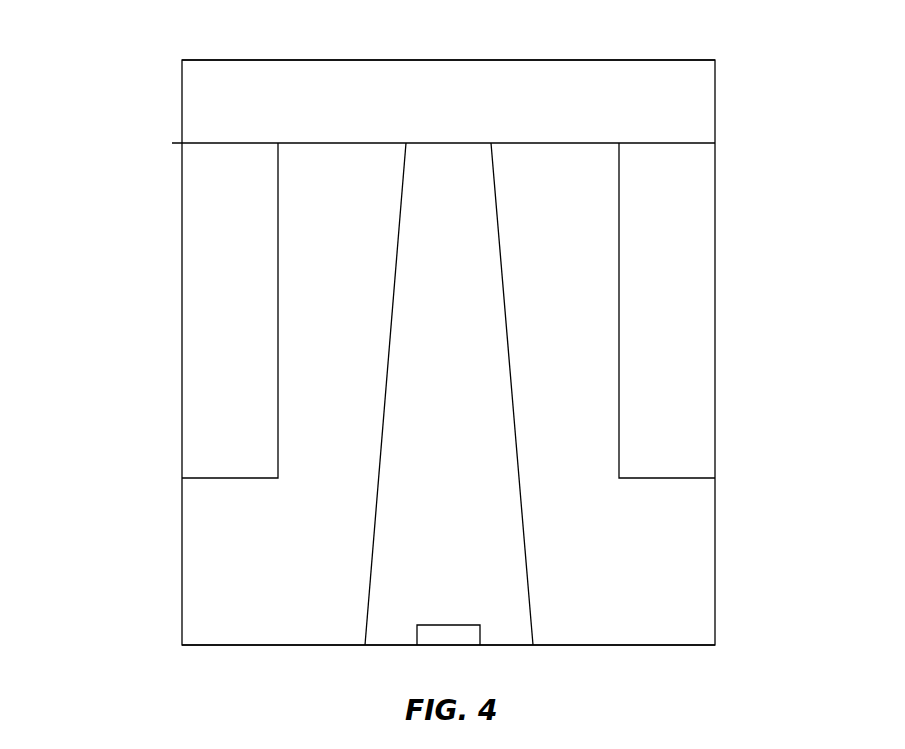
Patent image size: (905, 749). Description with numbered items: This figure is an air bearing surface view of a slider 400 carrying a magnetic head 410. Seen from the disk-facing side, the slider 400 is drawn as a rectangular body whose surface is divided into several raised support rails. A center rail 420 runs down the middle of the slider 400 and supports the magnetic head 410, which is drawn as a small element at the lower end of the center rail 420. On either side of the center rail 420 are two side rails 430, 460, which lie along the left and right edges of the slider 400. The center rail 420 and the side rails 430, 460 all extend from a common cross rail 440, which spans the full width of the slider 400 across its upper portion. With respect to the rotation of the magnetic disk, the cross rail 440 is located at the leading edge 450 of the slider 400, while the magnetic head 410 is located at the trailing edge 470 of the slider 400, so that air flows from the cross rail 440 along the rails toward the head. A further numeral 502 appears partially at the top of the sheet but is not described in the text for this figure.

The slider 400 is at (84, 567).
The magnetic head 410 is at (438, 635).
The center rail 420 is at (417, 468).
The side rail 430 is at (225, 278).
The cross rail 440 is at (225, 91).
The leading edge 450 is at (257, 58).
The side rail 460 is at (694, 302).
The trailing edge 470 is at (620, 647).
The partial numeral (clipped) 502 is at (708, 5).